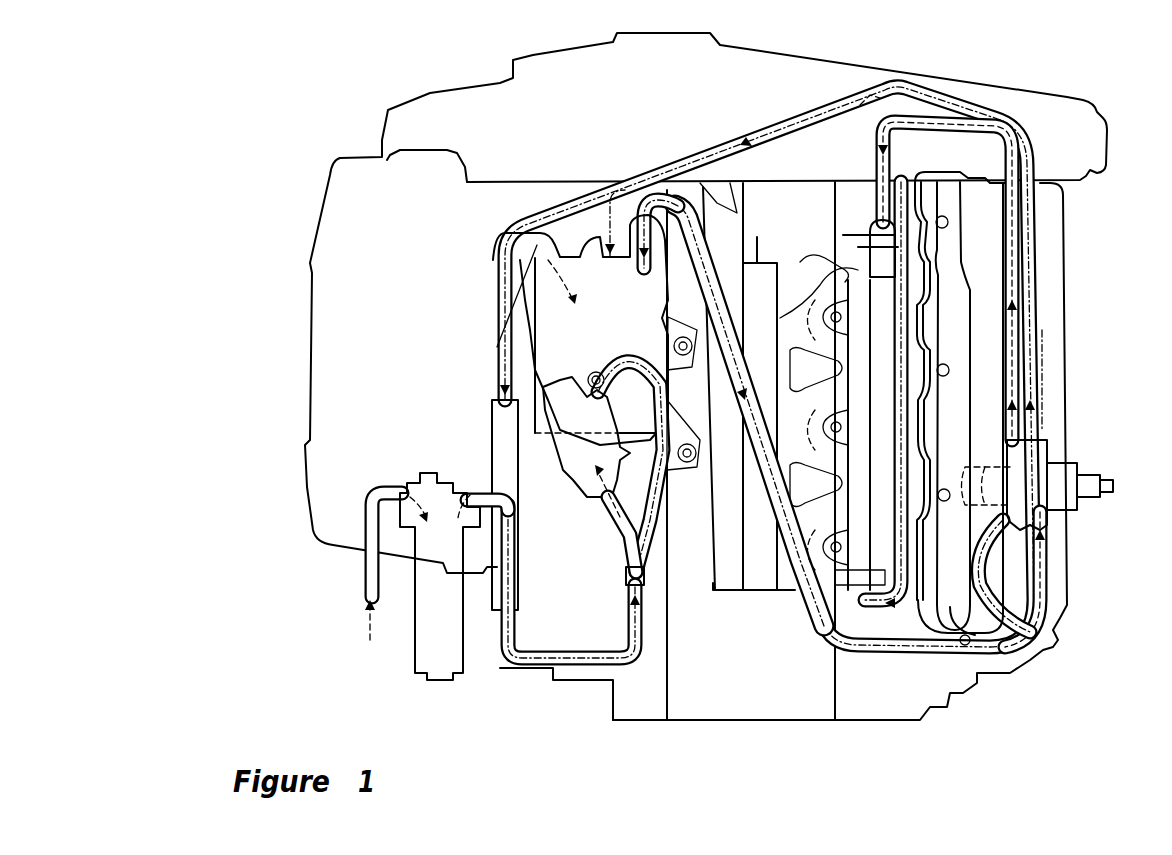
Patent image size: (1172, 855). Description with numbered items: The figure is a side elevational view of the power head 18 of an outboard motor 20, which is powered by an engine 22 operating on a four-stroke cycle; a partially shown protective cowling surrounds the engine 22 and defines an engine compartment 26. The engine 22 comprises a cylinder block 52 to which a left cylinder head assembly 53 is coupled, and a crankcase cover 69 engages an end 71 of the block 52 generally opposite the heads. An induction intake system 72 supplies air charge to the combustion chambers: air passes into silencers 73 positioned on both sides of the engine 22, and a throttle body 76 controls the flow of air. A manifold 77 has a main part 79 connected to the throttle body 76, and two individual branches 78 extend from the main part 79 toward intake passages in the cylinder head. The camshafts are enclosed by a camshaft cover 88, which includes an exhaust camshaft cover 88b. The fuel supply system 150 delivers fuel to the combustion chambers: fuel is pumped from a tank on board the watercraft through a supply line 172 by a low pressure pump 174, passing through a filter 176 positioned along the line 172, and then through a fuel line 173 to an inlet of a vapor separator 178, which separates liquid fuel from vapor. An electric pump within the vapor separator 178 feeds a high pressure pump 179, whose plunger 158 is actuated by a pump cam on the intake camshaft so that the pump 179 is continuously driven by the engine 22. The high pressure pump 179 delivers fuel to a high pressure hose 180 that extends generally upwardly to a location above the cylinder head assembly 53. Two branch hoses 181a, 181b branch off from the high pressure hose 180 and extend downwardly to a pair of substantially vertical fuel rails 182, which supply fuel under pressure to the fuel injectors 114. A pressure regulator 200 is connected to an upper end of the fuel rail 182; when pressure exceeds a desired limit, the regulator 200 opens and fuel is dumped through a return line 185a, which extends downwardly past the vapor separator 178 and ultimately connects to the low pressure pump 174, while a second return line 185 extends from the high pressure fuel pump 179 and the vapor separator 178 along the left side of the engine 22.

The power head 18 is at (902, 48).
The outboard motor 20 is at (1032, 52).
The engine 22 is at (711, 103).
The engine compartment 26 is at (426, 224).
The cylinder block 52 is at (767, 729).
The left cylinder head assembly 53 is at (887, 722).
The crankcase cover 69 is at (637, 722).
The end of the block 71 is at (663, 722).
The induction intake system 72 is at (783, 210).
The silencer 73 is at (741, 265).
The throttle body 76 is at (748, 630).
The manifold 77 is at (801, 265).
The branch 78 is at (833, 270).
The main part 79 is at (788, 312).
The camshaft cover 88 is at (963, 604).
The exhaust camshaft cover 88b is at (1068, 600).
The fuel injector 114 is at (823, 393).
The fuel supply system 150 is at (670, 148).
The plunger 158 is at (1047, 440).
The supply line 172 is at (380, 575).
The fuel line 173 is at (493, 262).
The low pressure pump 174 is at (563, 473).
The filter 176 is at (410, 677).
The vapor separator 178 is at (533, 342).
The high pressure pump 179 is at (1078, 462).
The high pressure hose 180 is at (1035, 245).
The branch hose 181a is at (897, 160).
The branch hose 181b is at (868, 128).
The fuel rail 182 is at (893, 445).
The second return line 185 is at (1045, 578).
The return line 185a is at (1044, 350).
The pressure regulator 200 is at (885, 265).